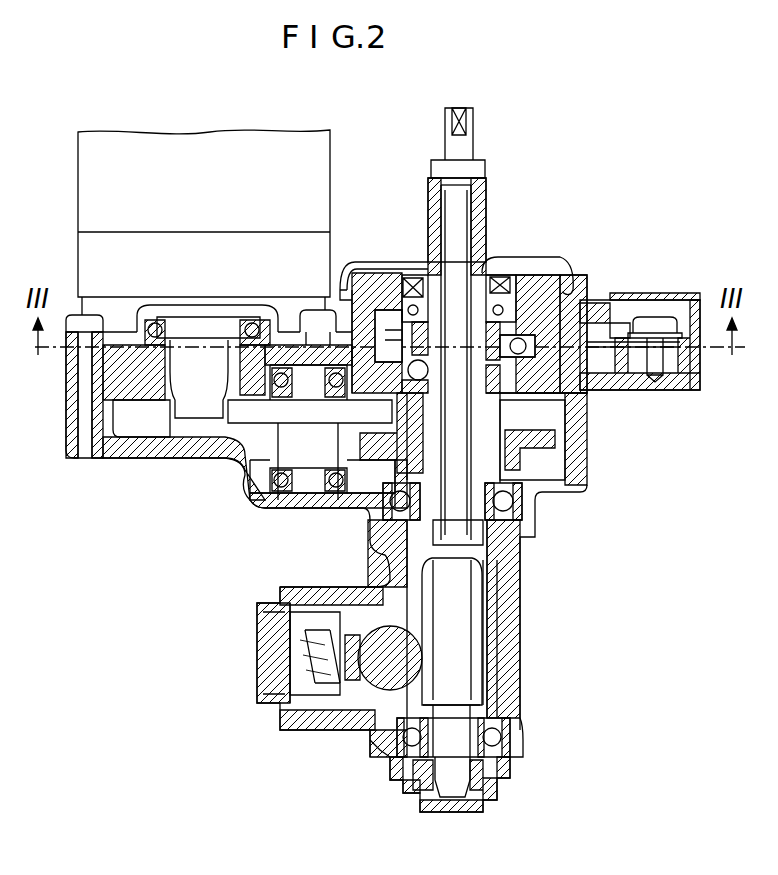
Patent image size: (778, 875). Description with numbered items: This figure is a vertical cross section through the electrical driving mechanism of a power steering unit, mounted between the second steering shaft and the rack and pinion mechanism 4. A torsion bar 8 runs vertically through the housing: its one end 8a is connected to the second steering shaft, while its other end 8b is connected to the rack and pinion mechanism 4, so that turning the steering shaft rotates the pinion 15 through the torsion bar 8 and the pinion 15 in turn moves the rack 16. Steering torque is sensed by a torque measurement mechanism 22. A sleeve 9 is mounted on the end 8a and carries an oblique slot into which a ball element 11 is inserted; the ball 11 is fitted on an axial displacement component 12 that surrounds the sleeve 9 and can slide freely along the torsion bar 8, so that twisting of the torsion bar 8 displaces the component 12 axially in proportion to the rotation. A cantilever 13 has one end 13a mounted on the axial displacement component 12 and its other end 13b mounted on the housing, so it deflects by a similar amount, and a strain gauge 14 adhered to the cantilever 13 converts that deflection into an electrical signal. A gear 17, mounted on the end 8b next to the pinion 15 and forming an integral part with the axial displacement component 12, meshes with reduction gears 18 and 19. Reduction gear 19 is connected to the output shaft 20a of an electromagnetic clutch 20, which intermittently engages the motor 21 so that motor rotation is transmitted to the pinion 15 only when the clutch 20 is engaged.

The rack and pinion mechanism 4 is at (492, 628).
The torsion bar 8 is at (470, 172).
The one end of torsion bar 8a is at (473, 140).
The other end of torsion bar 8b is at (480, 538).
The sleeve 9 is at (486, 206).
The ball element 11 is at (428, 310).
The axial displacement component 12 is at (382, 300).
The cantilever 13 is at (595, 340).
The one end of cantilever 13a is at (580, 395).
The other end of cantilever 13b is at (610, 378).
The strain gauge 14 is at (625, 340).
The pinion 15 is at (488, 674).
The rack 16 is at (400, 668).
The gear 17 is at (545, 448).
The reduction gear 18 is at (275, 458).
The reduction gear 19 is at (170, 414).
The electromagnetic clutch 20 is at (78, 232).
The output shaft of electromagnetic clutch 20a is at (196, 318).
The motor 21 is at (78, 176).
The torque measurement mechanism 22 is at (547, 325).